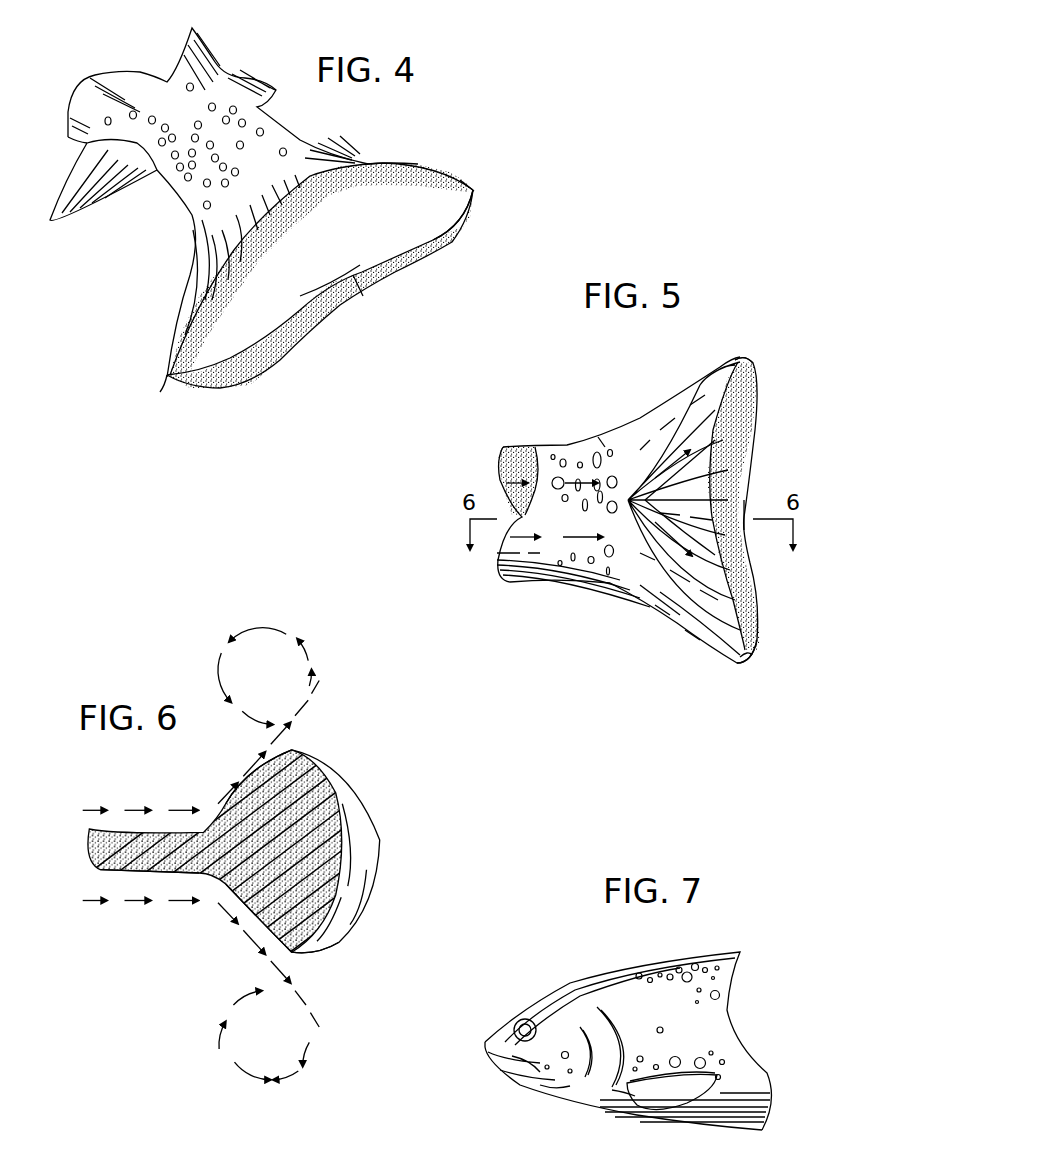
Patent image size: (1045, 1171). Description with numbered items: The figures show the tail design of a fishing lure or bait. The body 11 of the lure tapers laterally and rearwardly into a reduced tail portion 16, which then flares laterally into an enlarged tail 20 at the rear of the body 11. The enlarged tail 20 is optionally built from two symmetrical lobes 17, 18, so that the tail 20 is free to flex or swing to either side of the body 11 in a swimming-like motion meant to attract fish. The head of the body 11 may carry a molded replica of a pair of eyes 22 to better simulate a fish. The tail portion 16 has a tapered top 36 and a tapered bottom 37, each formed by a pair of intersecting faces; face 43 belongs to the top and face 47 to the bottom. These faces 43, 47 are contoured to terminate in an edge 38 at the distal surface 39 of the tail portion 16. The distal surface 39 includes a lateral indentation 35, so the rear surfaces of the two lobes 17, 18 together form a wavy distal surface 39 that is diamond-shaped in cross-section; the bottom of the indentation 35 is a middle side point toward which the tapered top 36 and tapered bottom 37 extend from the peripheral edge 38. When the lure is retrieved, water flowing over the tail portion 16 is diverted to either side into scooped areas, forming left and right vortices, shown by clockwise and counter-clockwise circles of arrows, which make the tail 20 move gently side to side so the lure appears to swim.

In FIG. 4, the body 11 is at (133, 83).
In FIG. 5, the body 11 is at (535, 450).
In FIG. 6, the body 11 is at (83, 847).
In FIG. 7, the body 11 is at (690, 960).
In FIG. 4, the tail portion 16 is at (207, 207).
In FIG. 5, the tail portion 16 is at (603, 440).
In FIG. 6, the tail portion 16 is at (149, 914).
In FIG. 4, the lobe 17 is at (447, 238).
In FIG. 4, the lobe 18 is at (425, 196).
In FIG. 5, the lobe 18 is at (697, 400).
In FIG. 6, the lobe 18 is at (227, 773).
In FIG. 5, the enlarged tail 20 is at (687, 623).
In FIG. 6, the enlarged tail 20 is at (273, 923).
In FIG. 7, the eyes 22 is at (537, 1027).
In FIG. 4, the lateral indentation 35 is at (363, 296).
In FIG. 5, the lateral indentation 35 is at (745, 510).
In FIG. 6, the lateral indentation 35 is at (313, 823).
In FIG. 4, the tapered top 36 is at (476, 191).
In FIG. 5, the tapered top 36 is at (750, 357).
In FIG. 4, the tapered bottom 37 is at (167, 375).
In FIG. 5, the tapered bottom 37 is at (747, 663).
In FIG. 6, the tapered bottom 37 is at (320, 893).
In FIG. 4, the edge 38 is at (417, 163).
In FIG. 5, the edge 38 is at (747, 650).
In FIG. 6, the edge 38 is at (337, 787).
In FIG. 4, the distal surface 39 is at (277, 353).
In FIG. 5, the distal surface 39 is at (757, 417).
In FIG. 4, the face 43 is at (345, 162).
In FIG. 5, the face 43 is at (670, 427).
In FIG. 4, the face 47 is at (190, 290).
In FIG. 5, the face 47 is at (660, 590).